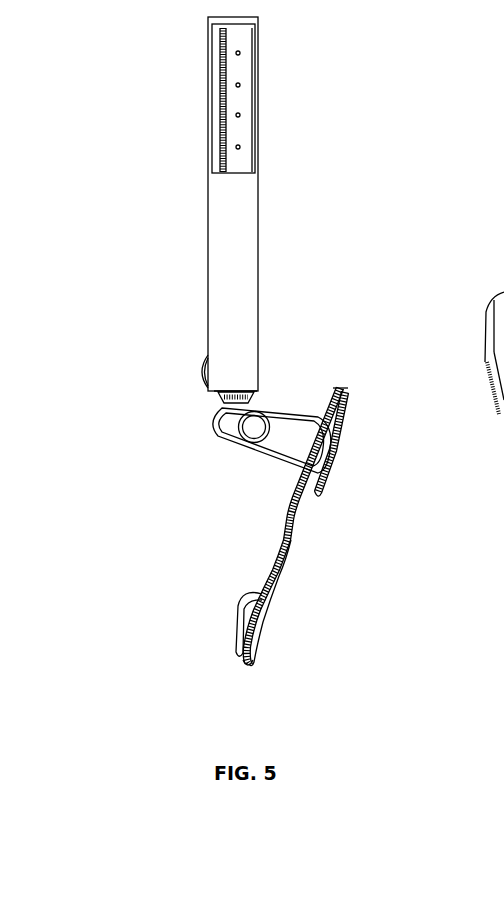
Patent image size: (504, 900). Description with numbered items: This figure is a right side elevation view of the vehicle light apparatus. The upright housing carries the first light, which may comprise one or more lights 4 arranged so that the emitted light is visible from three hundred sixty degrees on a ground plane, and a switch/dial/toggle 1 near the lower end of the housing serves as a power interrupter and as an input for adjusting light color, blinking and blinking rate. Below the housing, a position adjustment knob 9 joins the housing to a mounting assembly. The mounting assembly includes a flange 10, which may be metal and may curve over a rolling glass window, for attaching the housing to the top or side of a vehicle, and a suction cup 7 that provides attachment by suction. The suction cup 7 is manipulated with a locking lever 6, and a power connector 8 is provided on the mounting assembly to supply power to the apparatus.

The switch/dial/toggle 1 is at (200, 370).
The lights 4 is at (240, 116).
The locking lever 6 is at (235, 636).
The suction cup 7 is at (275, 586).
The power connector 8 is at (330, 472).
The position adjustment knob 9 is at (255, 425).
The flange 10 is at (345, 388).